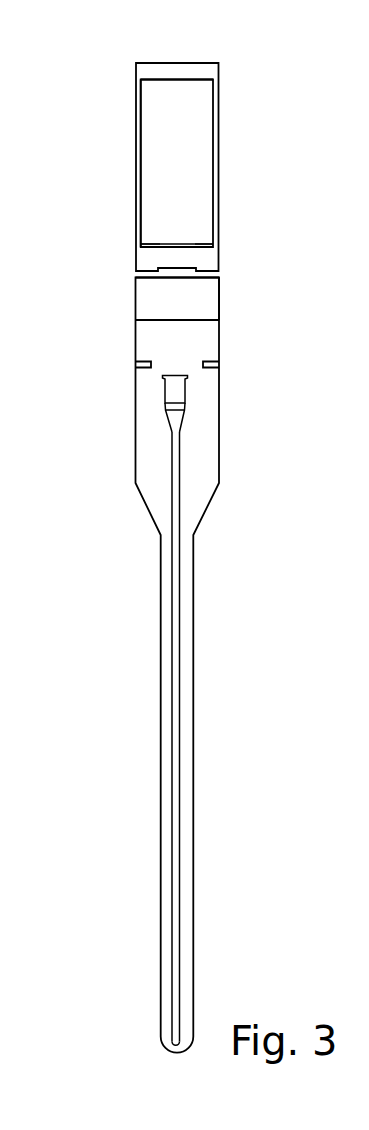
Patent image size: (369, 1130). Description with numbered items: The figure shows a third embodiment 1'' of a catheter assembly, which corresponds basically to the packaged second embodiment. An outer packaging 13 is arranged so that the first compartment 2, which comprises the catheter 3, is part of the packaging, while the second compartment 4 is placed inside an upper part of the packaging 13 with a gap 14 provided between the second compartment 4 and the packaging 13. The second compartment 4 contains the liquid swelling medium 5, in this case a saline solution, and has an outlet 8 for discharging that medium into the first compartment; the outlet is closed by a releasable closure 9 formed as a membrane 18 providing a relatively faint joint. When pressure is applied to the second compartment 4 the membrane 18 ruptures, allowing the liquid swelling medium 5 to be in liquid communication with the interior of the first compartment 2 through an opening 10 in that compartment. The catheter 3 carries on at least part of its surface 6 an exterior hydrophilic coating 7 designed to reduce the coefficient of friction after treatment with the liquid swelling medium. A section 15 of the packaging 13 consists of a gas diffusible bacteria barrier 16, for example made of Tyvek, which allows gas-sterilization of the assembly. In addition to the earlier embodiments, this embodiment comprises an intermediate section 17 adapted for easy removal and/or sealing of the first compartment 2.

The third embodiment of the catheter assembly 1'' is at (172, 530).
The first compartment 2 is at (202, 478).
The catheter 3 is at (180, 782).
The second compartment 4 is at (197, 172).
The liquid swelling medium 5 is at (178, 103).
The surface 6 is at (172, 695).
The exterior hydrophilic coating 7 is at (180, 722).
The outlet 8 is at (187, 243).
The releasable closure 9 is at (140, 246).
The opening 10 is at (177, 278).
The outer packaging 13 is at (136, 169).
The gap 14 is at (138, 192).
The section of the packaging 15 is at (197, 297).
The gas diffusible bacteria barrier 16 is at (207, 308).
The intermediate section 17 is at (207, 350).
The membrane 18 is at (213, 243).